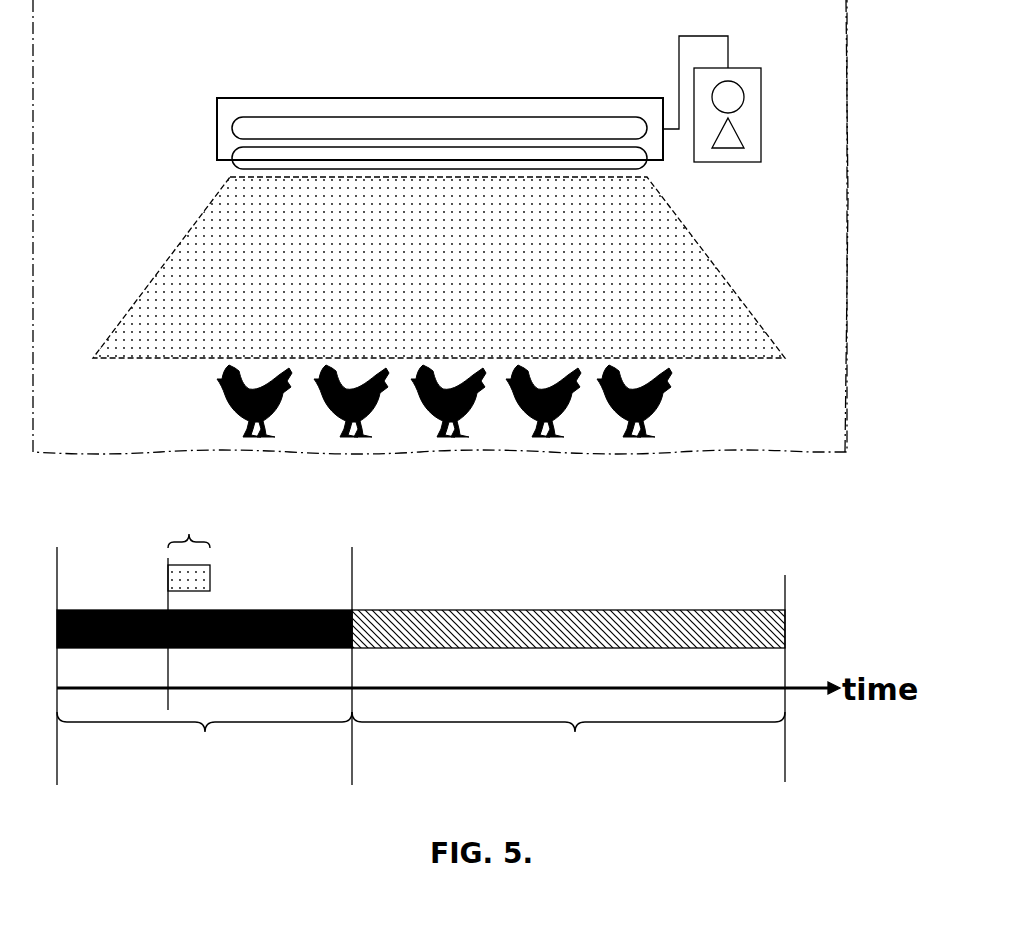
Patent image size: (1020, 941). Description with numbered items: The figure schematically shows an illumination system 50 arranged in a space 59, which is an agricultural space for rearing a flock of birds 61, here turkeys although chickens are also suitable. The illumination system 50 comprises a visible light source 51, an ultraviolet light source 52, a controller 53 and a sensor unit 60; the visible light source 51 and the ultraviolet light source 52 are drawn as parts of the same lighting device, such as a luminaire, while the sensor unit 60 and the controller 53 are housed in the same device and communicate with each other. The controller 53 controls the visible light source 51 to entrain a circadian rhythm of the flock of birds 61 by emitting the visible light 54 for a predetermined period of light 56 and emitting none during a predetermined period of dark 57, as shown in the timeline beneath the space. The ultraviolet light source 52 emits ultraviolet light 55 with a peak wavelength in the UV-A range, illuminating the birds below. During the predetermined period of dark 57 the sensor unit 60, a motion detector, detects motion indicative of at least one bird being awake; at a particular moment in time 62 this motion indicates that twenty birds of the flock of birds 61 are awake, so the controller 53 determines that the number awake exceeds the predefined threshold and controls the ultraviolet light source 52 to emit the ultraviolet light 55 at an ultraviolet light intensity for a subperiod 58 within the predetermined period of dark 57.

The illumination system 50 is at (200, 38).
The visible light source 51 is at (232, 125).
The ultraviolet light source 52 is at (232, 170).
The controller 53 is at (742, 86).
The visible light 54 is at (572, 610).
The ultraviolet light 55 is at (158, 292).
The predetermined period of light 56 is at (568, 746).
The predetermined period of dark 57 is at (204, 747).
The subperiod 58 is at (189, 520).
The space 59 is at (822, 208).
The sensor unit 60 is at (738, 126).
The flock of birds 61 is at (692, 390).
The moment in time 62 is at (164, 590).